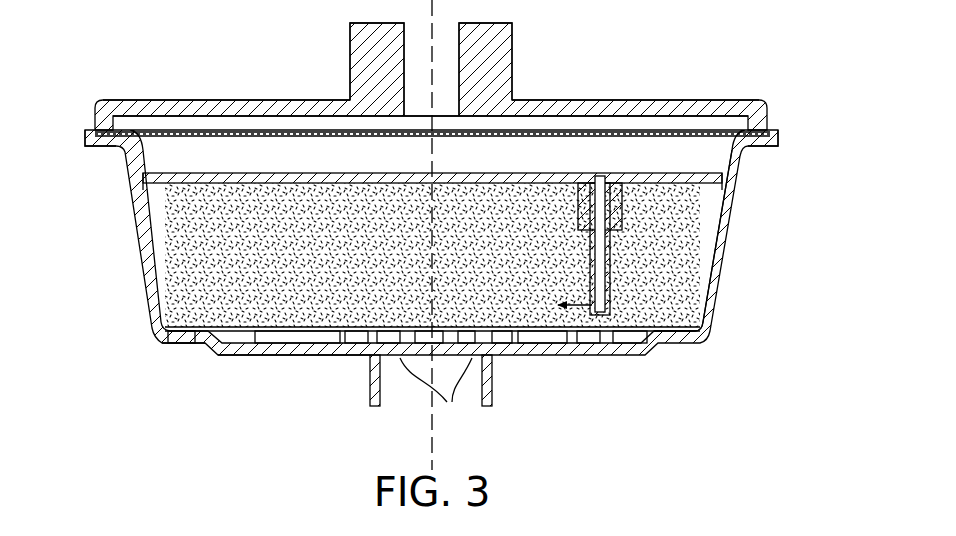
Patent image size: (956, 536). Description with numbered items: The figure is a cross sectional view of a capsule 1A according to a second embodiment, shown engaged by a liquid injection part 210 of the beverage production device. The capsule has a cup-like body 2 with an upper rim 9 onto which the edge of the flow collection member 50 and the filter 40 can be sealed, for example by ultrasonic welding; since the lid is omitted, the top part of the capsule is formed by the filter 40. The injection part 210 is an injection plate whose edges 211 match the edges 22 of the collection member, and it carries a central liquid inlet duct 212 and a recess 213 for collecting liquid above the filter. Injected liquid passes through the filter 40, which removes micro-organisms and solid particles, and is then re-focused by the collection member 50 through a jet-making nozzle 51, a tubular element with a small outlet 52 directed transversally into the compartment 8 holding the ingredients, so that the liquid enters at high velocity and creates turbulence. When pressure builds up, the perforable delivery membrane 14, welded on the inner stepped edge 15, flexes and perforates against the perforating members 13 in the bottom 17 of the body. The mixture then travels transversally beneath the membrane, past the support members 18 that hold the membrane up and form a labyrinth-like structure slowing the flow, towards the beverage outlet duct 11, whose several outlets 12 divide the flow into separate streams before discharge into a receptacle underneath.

The capsule 1A is at (131, 357).
The body 2 is at (730, 241).
The compartment 8 is at (713, 296).
The upper rim 9 is at (86, 147).
The beverage outlet duct 11 is at (393, 400).
The outlets 12 is at (446, 390).
The perforating members 13 is at (610, 342).
The perforable delivery membrane 14 is at (683, 331).
The inner stepped edge 15 is at (188, 344).
The bottom 17 is at (252, 356).
The support members 18 is at (364, 340).
The edges of the collection member 22 is at (755, 150).
The filter 40 is at (162, 130).
The flow collection member 50 is at (146, 204).
The jet-making nozzle 51 is at (598, 320).
The small outlet 52 is at (570, 326).
The liquid injection part 210 is at (268, 100).
The edges 211 is at (767, 113).
The liquid inlet duct 212 is at (512, 36).
The recess 213 is at (688, 116).